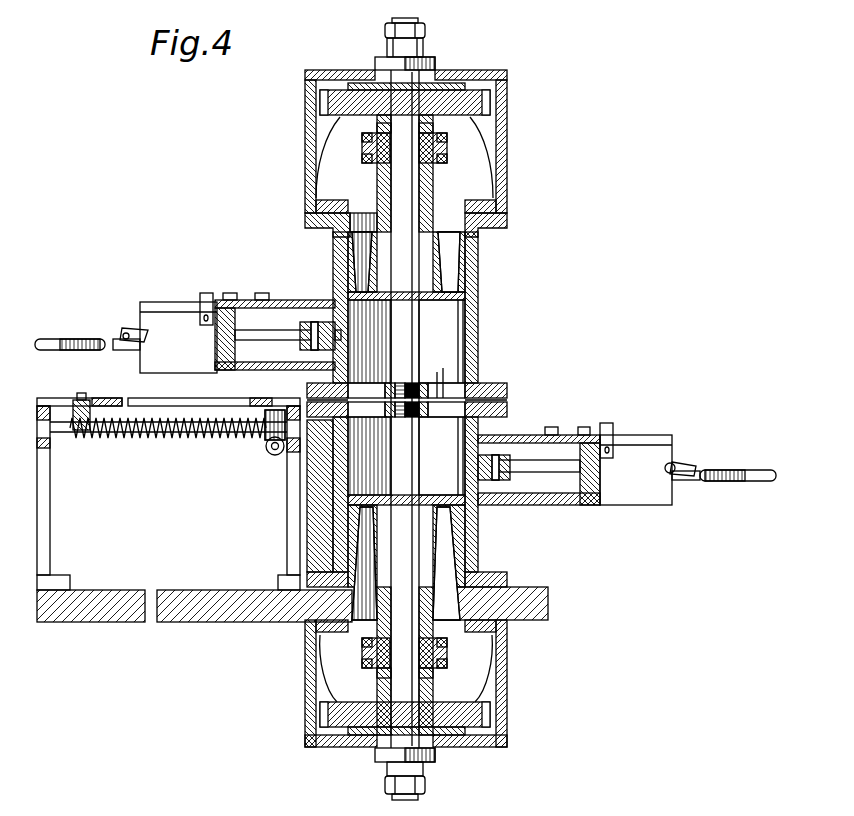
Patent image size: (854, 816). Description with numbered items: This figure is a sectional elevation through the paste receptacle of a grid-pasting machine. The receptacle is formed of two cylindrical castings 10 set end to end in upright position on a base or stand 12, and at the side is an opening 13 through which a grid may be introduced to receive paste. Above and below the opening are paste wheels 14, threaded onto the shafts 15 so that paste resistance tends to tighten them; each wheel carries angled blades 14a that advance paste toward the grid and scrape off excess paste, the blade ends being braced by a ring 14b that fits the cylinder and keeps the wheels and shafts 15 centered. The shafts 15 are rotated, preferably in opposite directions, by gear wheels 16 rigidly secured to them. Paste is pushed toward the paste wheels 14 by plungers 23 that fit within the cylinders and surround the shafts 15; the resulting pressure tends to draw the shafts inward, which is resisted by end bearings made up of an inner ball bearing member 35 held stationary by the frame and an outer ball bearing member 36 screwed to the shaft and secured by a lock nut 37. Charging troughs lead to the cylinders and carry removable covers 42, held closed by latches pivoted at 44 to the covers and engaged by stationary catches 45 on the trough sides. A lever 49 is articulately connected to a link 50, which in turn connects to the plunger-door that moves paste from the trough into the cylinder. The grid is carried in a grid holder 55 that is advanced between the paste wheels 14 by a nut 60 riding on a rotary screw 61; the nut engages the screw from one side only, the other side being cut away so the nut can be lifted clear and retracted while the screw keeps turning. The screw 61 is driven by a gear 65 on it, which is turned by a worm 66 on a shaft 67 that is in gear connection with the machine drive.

The casting 10 is at (480, 357).
The base 12 is at (215, 590).
The opening 13 is at (508, 394).
The paste wheel 14 is at (438, 400).
The blade 14a is at (395, 410).
The ring 14b is at (450, 400).
The shaft 15 is at (392, 23).
The wheel 16 is at (490, 104).
The plunger 23 is at (468, 307).
The ball bearing member 35 is at (435, 64).
The ball bearing member 36 is at (424, 48).
The lock nut 37 is at (425, 31).
The cover 42 is at (310, 300).
The pivot 44 is at (188, 302).
The catch 45 is at (208, 297).
The lever 49 is at (88, 343).
The link 50 is at (248, 338).
The grid holder 55 is at (256, 400).
The nut 60 is at (76, 412).
The screw 61 is at (195, 440).
The gear 65 is at (278, 410).
The worm 66 is at (276, 456).
The shaft 67 is at (266, 449).